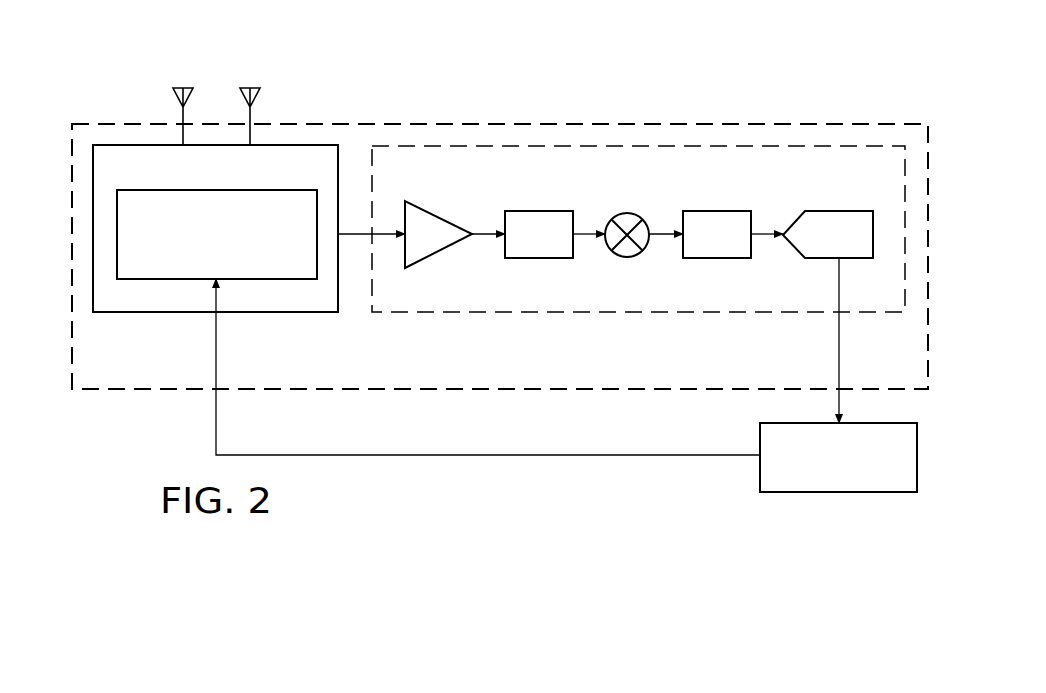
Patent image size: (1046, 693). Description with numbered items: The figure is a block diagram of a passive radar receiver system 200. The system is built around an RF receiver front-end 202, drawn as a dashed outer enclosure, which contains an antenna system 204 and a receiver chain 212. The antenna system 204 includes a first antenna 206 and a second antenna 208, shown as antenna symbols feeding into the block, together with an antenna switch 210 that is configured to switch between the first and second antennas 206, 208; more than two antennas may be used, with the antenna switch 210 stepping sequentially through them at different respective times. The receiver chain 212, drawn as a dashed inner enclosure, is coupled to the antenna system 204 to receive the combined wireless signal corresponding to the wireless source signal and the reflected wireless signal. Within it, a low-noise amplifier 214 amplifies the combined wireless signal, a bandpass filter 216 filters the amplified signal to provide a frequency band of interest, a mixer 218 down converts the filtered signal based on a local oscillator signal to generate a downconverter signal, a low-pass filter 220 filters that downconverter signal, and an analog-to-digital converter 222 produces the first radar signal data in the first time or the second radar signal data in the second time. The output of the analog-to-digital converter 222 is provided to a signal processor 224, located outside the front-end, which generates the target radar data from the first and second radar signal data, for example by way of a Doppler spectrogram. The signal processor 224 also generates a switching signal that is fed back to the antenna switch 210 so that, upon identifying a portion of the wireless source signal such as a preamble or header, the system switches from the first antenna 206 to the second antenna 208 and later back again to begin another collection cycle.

The passive radar receiver system 200 is at (822, 90).
The RF receiver front-end 202 is at (715, 121).
The antenna system 204 is at (183, 313).
The first antenna 206 is at (178, 87).
The second antenna 208 is at (245, 87).
The antenna switch 210 is at (193, 266).
The receiver chain 212 is at (719, 316).
The low-noise amplifier 214 is at (441, 218).
The bandpass filter 216 is at (537, 211).
The mixer 218 is at (628, 213).
The low-pass filter 220 is at (717, 211).
The analog-to-digital converter 222 is at (850, 211).
The signal processor 224 is at (872, 493).